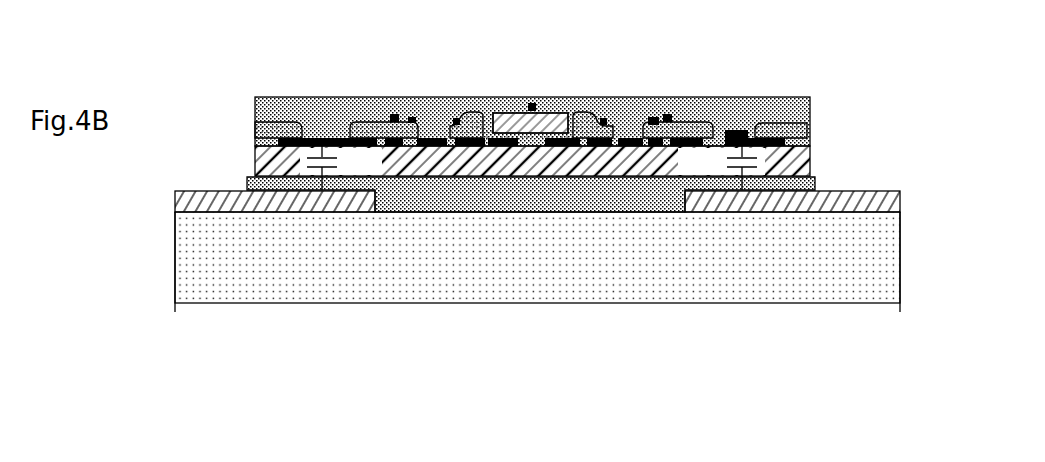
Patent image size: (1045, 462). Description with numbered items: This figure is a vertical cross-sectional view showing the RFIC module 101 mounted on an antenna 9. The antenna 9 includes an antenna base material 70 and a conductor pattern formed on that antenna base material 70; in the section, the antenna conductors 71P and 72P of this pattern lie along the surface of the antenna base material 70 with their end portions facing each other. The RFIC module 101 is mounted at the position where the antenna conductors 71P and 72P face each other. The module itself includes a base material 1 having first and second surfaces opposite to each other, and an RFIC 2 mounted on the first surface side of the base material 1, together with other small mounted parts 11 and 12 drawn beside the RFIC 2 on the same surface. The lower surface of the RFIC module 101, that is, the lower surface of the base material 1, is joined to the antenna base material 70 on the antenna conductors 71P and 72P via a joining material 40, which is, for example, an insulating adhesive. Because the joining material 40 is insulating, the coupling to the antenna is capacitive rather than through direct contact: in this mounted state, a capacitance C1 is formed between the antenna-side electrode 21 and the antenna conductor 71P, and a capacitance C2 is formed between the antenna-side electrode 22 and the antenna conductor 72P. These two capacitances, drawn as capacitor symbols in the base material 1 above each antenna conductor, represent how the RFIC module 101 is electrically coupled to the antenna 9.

The RFIC module 101 is at (568, 113).
The base material 1 is at (808, 152).
The RFIC 2 is at (540, 115).
The electronic component 11 is at (490, 113).
The electronic component 12 is at (577, 117).
The antenna-side electrode 21 is at (302, 137).
The antenna-side electrode 22 is at (760, 135).
The joining material 40 is at (815, 180).
The antenna base material 70 is at (530, 290).
The antenna conductor 71P is at (217, 190).
The antenna conductor 72P is at (872, 198).
The antenna 9 is at (546, 263).
The capacitance C1 is at (341, 168).
The capacitance C2 is at (721, 168).